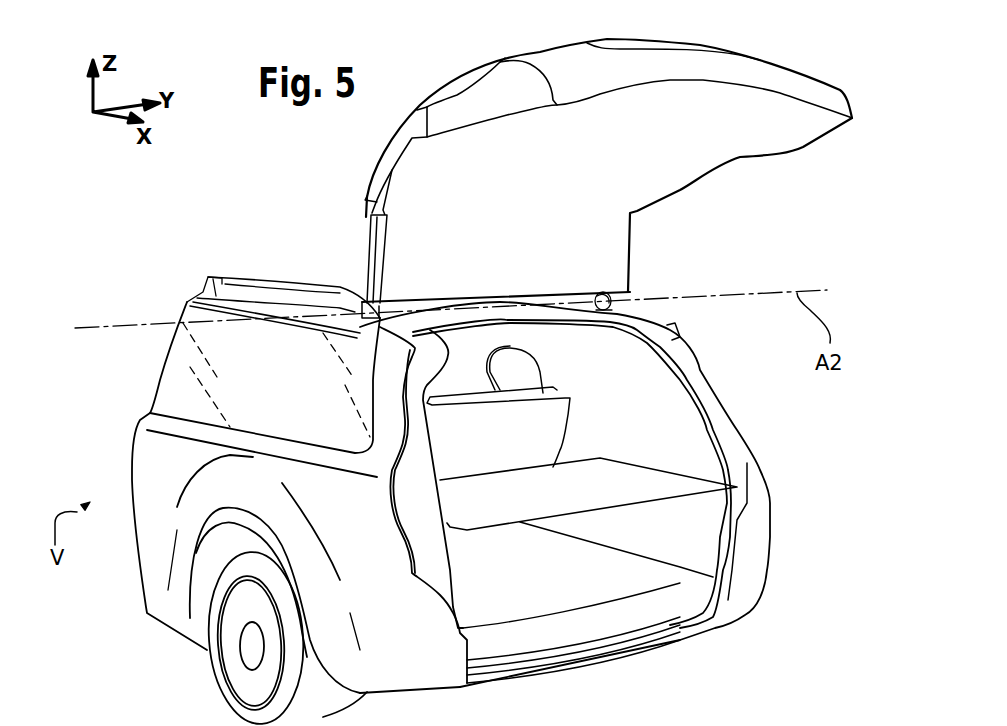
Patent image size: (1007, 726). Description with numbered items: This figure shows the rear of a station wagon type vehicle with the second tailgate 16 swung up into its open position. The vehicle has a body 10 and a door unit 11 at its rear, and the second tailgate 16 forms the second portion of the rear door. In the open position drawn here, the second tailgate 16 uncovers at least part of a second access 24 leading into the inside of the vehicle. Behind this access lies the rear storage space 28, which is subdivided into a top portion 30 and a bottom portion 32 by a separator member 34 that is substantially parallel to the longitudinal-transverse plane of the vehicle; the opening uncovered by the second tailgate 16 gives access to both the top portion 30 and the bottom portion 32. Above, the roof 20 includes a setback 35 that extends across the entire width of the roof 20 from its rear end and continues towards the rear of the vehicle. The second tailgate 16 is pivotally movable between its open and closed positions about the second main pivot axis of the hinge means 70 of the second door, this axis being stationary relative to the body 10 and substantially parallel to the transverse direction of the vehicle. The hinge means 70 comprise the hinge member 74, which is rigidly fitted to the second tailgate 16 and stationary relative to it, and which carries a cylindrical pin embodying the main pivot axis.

The body 10 is at (173, 612).
The door unit 11 is at (813, 183).
The second tailgate 16 is at (747, 70).
The roof 20 is at (342, 280).
The second access 24 is at (666, 528).
The rear storage space 28 is at (803, 510).
The top portion 30 is at (636, 425).
The bottom portion 32 is at (590, 584).
The separator member 34 is at (700, 468).
The setback 35 is at (593, 352).
The hinge means 70 is at (340, 327).
The hinge member 74 is at (392, 298).